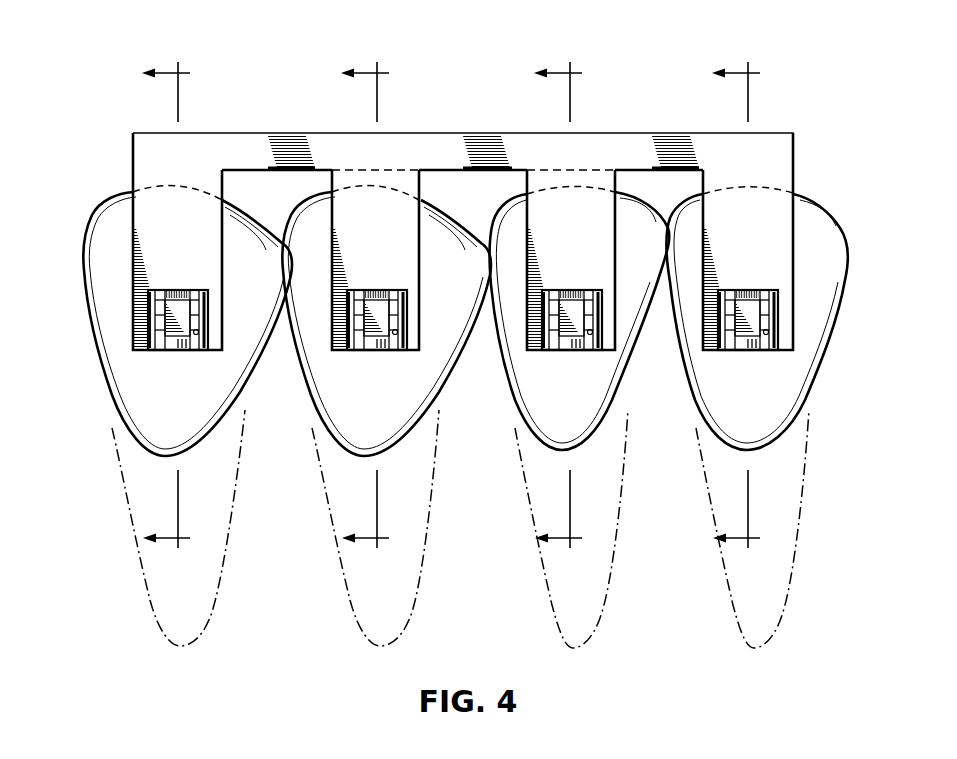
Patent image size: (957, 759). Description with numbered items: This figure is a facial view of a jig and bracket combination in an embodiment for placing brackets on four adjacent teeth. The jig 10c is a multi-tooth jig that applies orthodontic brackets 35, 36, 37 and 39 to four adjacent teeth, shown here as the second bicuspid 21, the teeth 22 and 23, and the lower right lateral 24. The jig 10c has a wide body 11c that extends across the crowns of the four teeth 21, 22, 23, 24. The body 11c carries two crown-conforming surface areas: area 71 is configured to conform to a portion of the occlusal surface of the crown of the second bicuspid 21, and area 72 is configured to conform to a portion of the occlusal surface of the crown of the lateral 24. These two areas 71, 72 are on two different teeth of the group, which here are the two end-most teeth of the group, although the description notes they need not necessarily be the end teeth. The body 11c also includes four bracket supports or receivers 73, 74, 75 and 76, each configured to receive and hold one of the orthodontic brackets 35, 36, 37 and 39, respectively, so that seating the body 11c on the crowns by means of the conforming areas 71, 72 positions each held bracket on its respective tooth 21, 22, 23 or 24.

The jig 10c is at (114, 121).
The body 11c is at (250, 133).
The crown-conforming surface area 71 is at (174, 186).
The crown-conforming surface area 72 is at (752, 194).
The bracket support or receiver 73 is at (172, 278).
The bracket support or receiver 74 is at (366, 253).
The bracket support or receiver 75 is at (559, 253).
The bracket support or receiver 76 is at (741, 278).
The second bicuspid 21 is at (147, 418).
The tooth 22 is at (386, 419).
The tooth 23 is at (536, 416).
The lower right lateral 24 is at (736, 413).
The orthodontic bracket 35 is at (176, 352).
The orthodontic bracket 36 is at (376, 352).
The orthodontic bracket 37 is at (573, 352).
The orthodontic bracket 39 is at (753, 352).